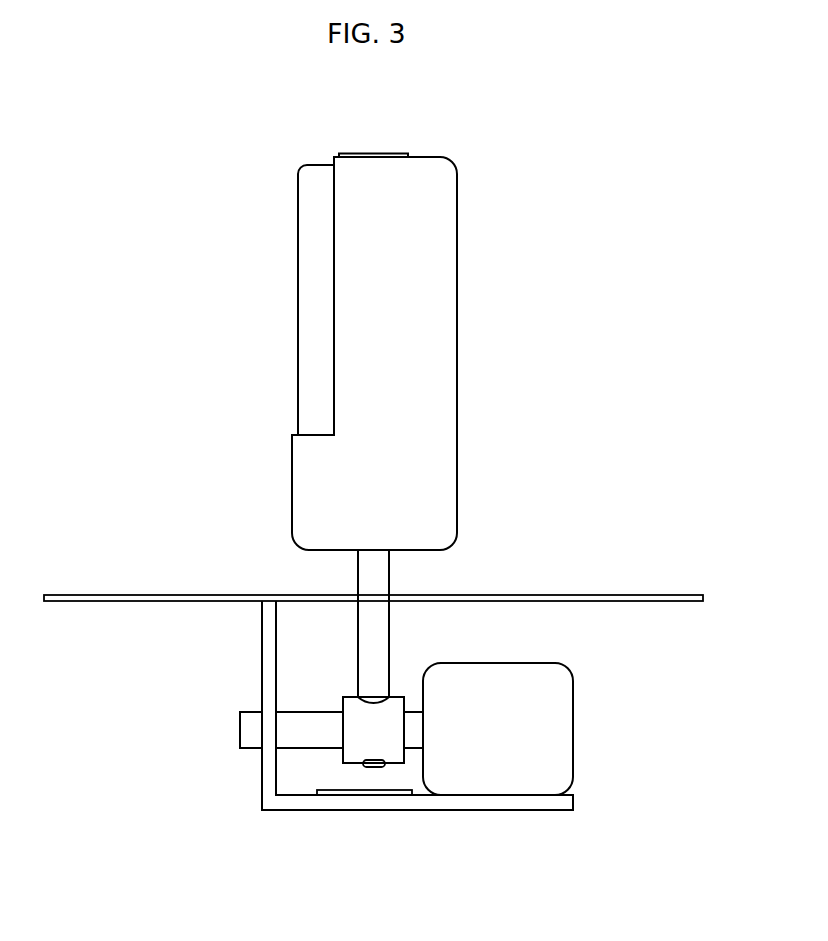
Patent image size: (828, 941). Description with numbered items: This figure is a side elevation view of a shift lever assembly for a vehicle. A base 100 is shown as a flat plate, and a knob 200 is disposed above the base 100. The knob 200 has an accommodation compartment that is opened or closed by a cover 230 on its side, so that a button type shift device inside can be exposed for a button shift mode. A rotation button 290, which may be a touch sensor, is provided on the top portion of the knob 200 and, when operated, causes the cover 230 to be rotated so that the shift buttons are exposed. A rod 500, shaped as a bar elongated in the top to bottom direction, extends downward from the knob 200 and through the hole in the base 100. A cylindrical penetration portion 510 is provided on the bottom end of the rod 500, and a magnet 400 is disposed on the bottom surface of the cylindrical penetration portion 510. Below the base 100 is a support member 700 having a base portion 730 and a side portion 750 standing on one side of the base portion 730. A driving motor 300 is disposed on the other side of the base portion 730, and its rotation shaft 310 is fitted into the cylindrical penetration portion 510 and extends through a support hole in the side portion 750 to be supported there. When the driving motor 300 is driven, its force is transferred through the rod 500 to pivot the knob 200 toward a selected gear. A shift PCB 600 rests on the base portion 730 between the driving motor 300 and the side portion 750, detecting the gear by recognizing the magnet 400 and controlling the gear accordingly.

The base 100 is at (597, 595).
The knob 200 is at (474, 318).
The cover 230 is at (316, 318).
The rotation button 290 is at (369, 153).
The driving motor 300 is at (556, 700).
The rotation shaft 310 is at (316, 740).
The magnet 400 is at (373, 768).
The rod 500 is at (380, 637).
The cylindrical penetration portion 510 is at (382, 732).
The shift PCB 600 is at (400, 795).
The support member 700 is at (247, 667).
The base portion 730 is at (508, 800).
The side portion 750 is at (268, 696).